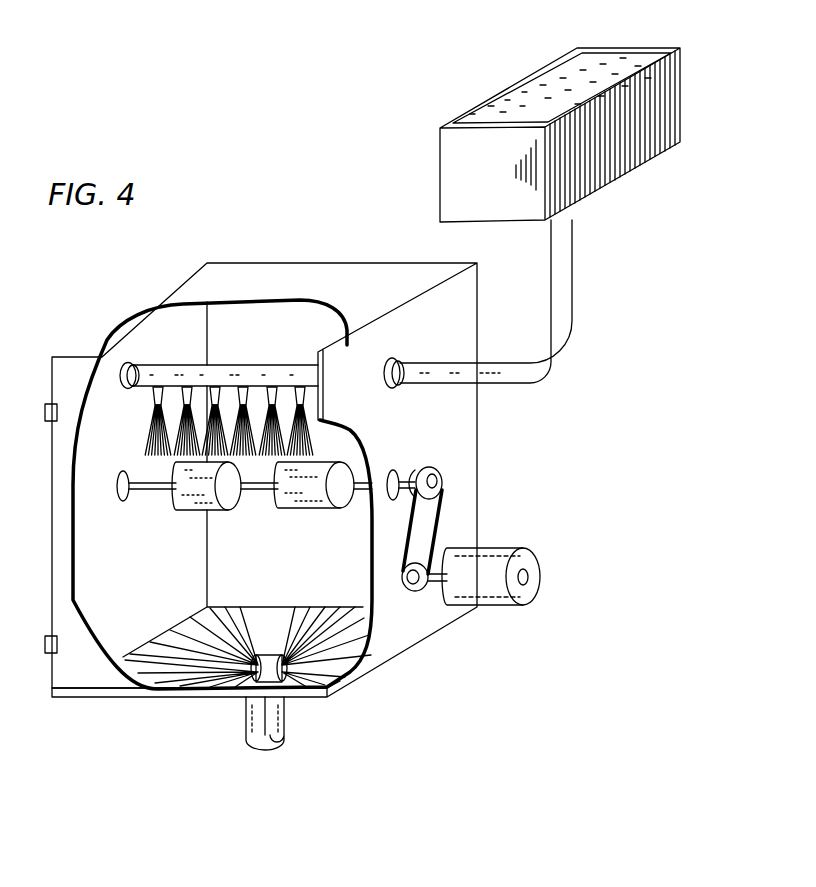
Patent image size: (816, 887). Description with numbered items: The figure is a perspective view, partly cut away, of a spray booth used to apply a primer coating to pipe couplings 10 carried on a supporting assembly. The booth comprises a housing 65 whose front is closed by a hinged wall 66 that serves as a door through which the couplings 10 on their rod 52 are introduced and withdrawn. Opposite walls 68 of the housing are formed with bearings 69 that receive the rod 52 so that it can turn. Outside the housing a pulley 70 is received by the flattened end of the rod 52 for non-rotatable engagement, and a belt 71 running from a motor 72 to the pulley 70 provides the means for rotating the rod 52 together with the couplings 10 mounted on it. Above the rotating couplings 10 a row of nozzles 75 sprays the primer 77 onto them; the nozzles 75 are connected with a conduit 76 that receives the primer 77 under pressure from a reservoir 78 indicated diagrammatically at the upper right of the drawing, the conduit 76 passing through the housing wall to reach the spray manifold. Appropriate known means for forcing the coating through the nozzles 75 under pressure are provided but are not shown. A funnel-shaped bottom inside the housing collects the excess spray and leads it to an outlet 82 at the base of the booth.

The coupling 10 is at (306, 522).
The rod 52 is at (148, 492).
The housing 65 is at (347, 270).
The hinged wall 66 is at (102, 690).
The opposite walls 68 is at (134, 577).
The bearings 69 is at (122, 470).
The pulley 70 is at (444, 481).
The belt 71 is at (440, 522).
The motor 72 is at (508, 549).
The nozzles 75 is at (236, 412).
The conduit 76 is at (487, 372).
The primer 77 is at (583, 72).
The reservoir 78 is at (605, 188).
The drain pipe 82 is at (282, 723).